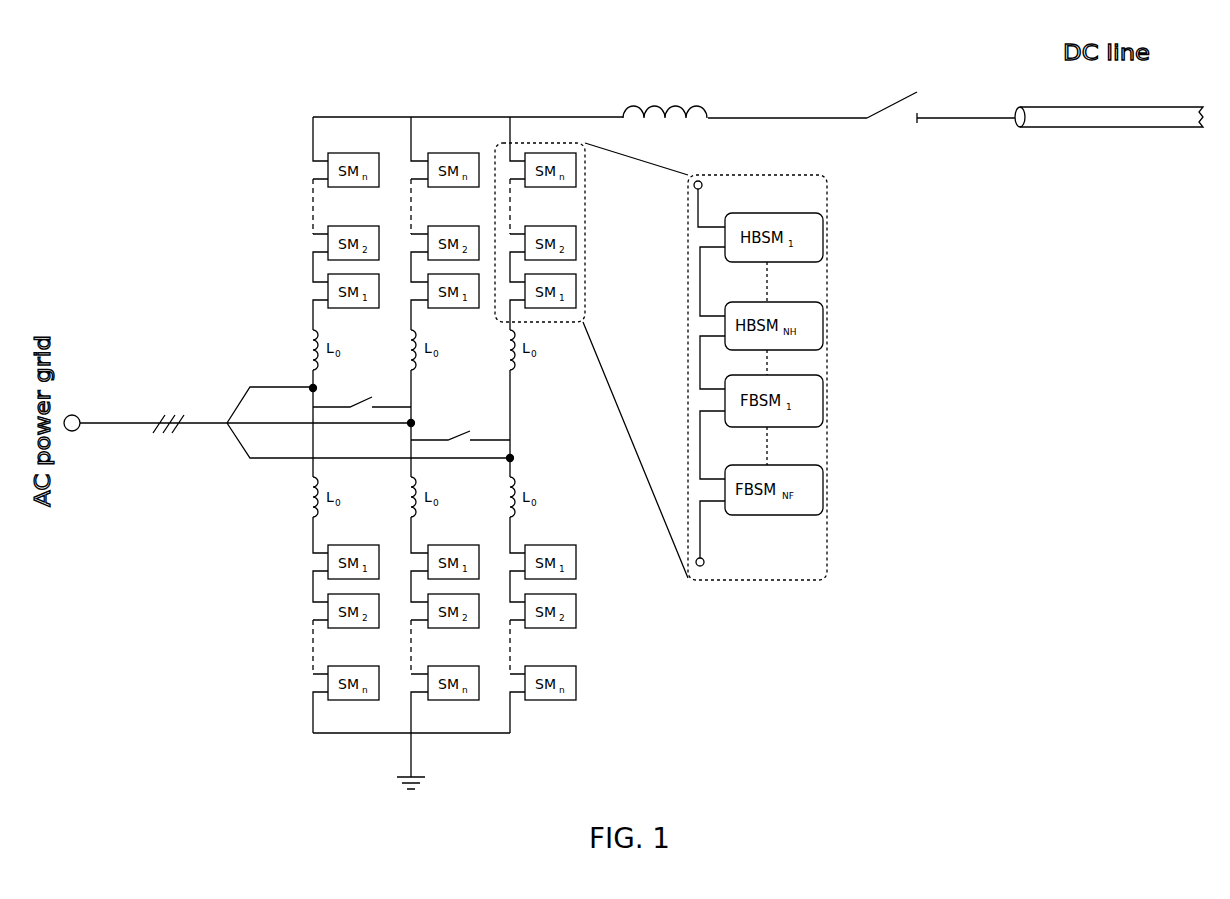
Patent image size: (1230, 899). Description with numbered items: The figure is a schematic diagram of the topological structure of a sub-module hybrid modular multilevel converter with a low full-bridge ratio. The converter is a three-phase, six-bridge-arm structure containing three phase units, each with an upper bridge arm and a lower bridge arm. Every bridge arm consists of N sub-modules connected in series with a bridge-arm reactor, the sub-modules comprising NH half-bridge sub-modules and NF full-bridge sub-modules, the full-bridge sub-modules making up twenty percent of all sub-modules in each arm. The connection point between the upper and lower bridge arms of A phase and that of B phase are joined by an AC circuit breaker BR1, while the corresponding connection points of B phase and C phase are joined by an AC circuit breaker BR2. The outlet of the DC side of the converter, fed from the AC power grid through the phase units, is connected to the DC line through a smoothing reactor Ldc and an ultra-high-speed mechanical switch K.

The smoothing reactor Ldc is at (590, 70).
The ultra-high-speed mechanical switch K is at (896, 73).
The AC circuit breaker BR1 is at (362, 392).
The AC circuit breaker BR2 is at (460, 425).